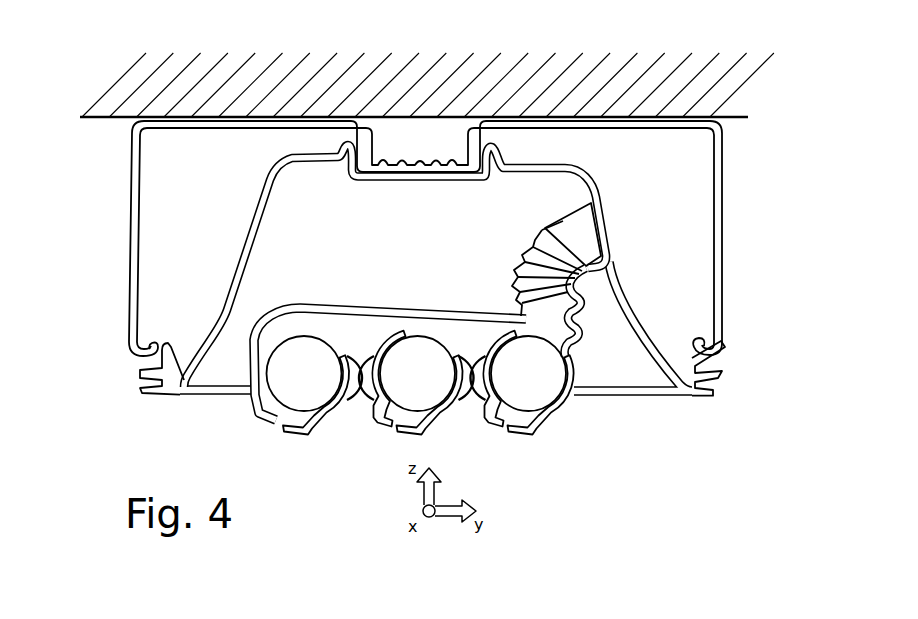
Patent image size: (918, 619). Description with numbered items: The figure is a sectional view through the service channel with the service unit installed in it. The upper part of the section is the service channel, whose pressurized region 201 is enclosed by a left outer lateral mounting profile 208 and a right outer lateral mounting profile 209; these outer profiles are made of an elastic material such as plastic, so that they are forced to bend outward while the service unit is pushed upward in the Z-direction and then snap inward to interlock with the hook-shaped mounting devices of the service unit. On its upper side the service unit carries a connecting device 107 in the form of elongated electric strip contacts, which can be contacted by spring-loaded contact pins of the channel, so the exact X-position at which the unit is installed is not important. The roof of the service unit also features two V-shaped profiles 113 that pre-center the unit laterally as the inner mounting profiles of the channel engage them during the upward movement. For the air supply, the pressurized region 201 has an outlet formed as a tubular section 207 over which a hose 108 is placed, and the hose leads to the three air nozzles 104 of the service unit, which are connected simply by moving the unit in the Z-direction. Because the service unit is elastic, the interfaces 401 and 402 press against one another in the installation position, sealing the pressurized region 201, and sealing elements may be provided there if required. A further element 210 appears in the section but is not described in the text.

The air nozzles 104 is at (440, 410).
The connecting device 107 is at (396, 164).
The hose 108 is at (522, 254).
The V-shaped profiles 113 is at (352, 165).
The pressurized region 201 is at (641, 142).
The tubular section 207 is at (607, 262).
The left outer lateral mounting profile 208 is at (131, 262).
The right outer lateral mounting profile 209 is at (723, 288).
The mounting surface (ceiling) 210 is at (98, 99).
The interface 401 is at (487, 168).
The interface 402 is at (717, 348).